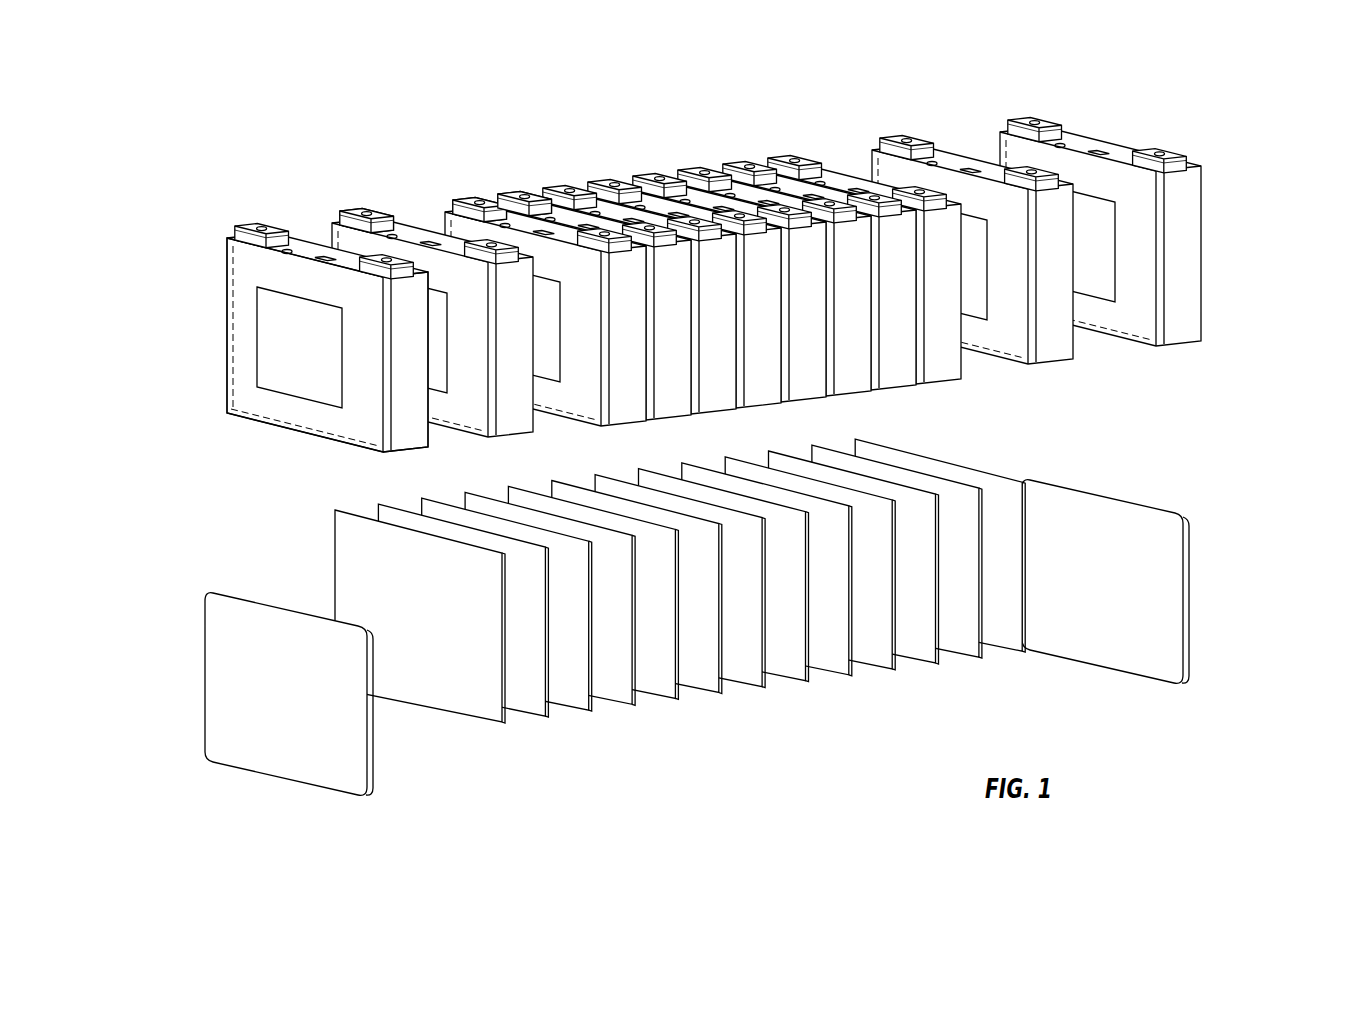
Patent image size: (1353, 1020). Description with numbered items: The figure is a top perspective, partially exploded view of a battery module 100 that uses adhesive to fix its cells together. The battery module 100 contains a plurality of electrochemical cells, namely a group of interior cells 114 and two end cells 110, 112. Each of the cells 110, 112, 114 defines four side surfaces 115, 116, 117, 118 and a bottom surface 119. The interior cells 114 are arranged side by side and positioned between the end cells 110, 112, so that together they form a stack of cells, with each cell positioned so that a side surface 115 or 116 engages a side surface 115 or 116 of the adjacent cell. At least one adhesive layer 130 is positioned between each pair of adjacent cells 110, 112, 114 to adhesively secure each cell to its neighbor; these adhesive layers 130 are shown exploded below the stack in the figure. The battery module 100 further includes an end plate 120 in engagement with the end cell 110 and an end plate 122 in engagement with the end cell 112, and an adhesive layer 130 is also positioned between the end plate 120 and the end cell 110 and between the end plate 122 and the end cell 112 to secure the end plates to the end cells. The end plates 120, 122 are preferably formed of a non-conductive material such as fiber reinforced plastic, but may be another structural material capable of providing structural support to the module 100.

The battery module 100 is at (722, 454).
The end cell 110 is at (328, 349).
The end cell 112 is at (1206, 222).
The interior cells 114 is at (502, 178).
The side surface 115 is at (250, 405).
The side surface 116 is at (433, 434).
The side surface 117 is at (413, 440).
The side surface 118 is at (228, 372).
The bottom surface 119 is at (338, 441).
The end plate 120 is at (205, 688).
The end plate 122 is at (1172, 597).
The adhesive layer 130 is at (596, 726).